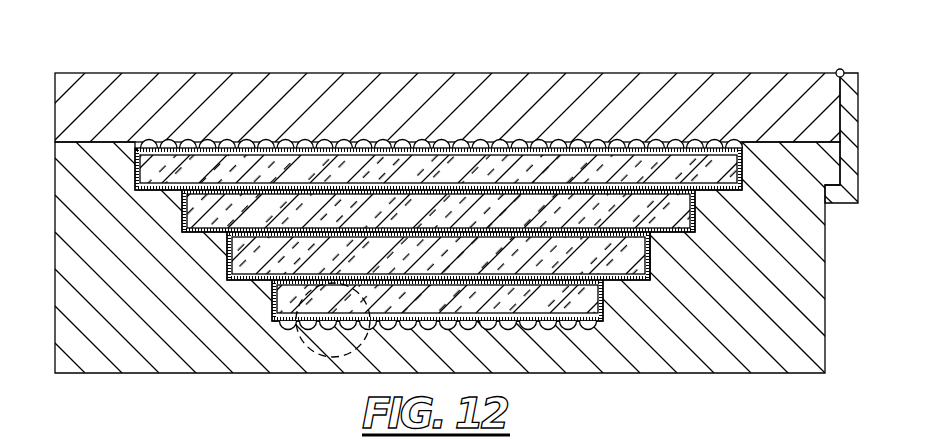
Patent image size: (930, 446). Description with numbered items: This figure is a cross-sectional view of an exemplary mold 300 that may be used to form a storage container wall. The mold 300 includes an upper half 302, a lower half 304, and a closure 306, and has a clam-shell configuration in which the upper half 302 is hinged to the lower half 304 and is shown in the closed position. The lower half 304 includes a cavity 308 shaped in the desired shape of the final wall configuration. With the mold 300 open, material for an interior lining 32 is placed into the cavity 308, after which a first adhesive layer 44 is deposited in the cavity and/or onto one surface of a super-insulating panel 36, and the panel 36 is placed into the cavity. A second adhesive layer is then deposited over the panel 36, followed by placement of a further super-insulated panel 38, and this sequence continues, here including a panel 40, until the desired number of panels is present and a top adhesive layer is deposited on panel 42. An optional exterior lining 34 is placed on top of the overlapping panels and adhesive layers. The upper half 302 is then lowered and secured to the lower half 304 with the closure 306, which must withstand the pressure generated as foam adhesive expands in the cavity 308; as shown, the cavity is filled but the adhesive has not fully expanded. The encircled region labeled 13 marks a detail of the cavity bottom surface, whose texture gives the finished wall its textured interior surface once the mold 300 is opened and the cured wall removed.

The mold 300 is at (123, 32).
The upper half 302 is at (160, 93).
The lower half 304 is at (167, 360).
The closure 306 is at (847, 150).
The cavity 308 is at (647, 271).
The exterior lining 34 is at (382, 142).
The panel 42 is at (512, 167).
The second layer 40 is at (430, 211).
The super-insulated panel 38 is at (426, 262).
The first adhesive layer 44 is at (228, 252).
The super-insulating panel 36 is at (530, 303).
The interior lining 32 is at (424, 326).
The detail region 13 is at (315, 348).